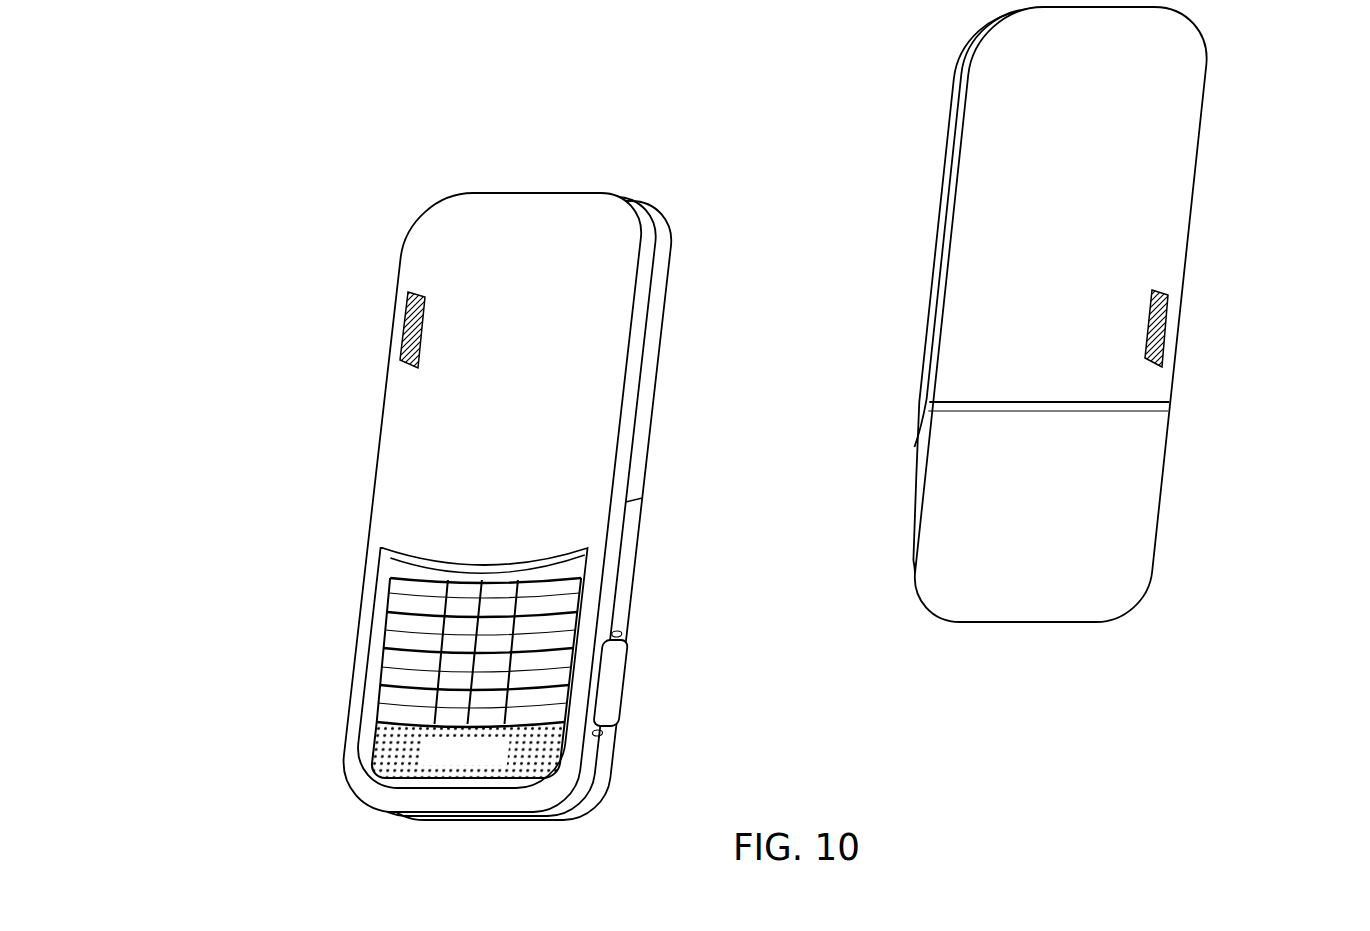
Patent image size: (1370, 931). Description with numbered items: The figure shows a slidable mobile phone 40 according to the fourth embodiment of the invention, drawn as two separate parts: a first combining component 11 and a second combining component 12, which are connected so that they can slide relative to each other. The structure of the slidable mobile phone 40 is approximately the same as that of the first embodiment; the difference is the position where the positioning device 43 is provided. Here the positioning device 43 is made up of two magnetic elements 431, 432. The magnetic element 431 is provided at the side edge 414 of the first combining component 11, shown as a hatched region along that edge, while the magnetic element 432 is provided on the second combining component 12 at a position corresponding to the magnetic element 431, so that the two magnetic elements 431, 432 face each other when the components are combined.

The slidable mobile phone 40 is at (354, 91).
The first combining component 11 is at (355, 657).
The second combining component 12 is at (1160, 491).
The side edge 414 is at (405, 441).
The positioning device 43 is at (843, 315).
The magnetic element 431 is at (425, 328).
The magnetic element 432 is at (1152, 325).